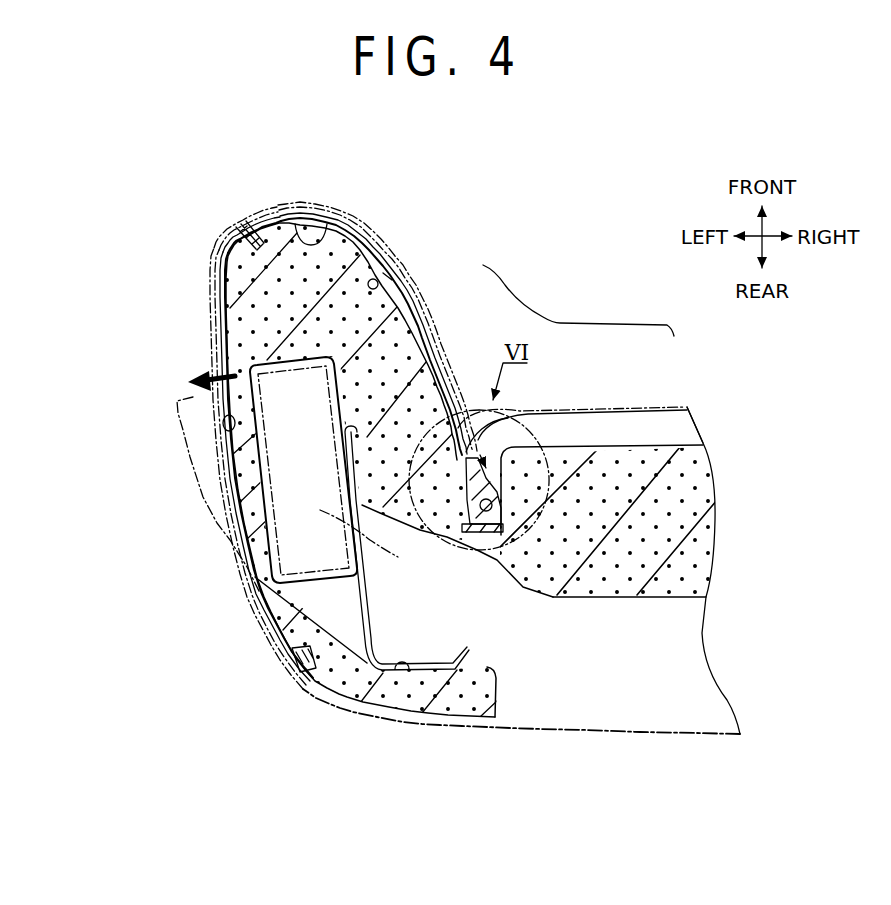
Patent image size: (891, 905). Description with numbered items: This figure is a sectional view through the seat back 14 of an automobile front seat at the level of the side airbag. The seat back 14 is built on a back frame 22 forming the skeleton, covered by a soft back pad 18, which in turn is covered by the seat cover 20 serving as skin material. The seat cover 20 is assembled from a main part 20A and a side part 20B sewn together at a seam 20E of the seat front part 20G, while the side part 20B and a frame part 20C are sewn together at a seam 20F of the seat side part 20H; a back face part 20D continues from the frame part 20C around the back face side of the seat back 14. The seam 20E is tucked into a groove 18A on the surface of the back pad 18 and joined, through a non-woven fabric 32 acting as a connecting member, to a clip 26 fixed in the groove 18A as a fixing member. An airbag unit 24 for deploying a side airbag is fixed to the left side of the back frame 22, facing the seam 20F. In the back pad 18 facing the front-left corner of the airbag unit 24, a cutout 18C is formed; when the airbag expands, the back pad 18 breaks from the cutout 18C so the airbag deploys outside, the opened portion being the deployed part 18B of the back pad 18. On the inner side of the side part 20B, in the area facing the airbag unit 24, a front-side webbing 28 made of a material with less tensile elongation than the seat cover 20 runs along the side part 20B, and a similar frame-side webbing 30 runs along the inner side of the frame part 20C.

The seat back 14 is at (537, 753).
The back pad 18 is at (621, 460).
The groove 18A is at (500, 478).
The deployed part 18B is at (200, 468).
The cutout 18C is at (257, 370).
The seat cover 20 is at (593, 407).
The main part 20A is at (653, 404).
The side part 20B is at (427, 320).
The frame part 20C is at (211, 307).
The back face part 20D is at (400, 726).
The seam 20E is at (507, 420).
The seam 20F is at (230, 225).
The seat front part 20G is at (578, 300).
The seat side part 20H is at (190, 223).
The back frame 22 is at (373, 624).
The airbag unit 24 is at (377, 541).
The clip 26 is at (483, 540).
The front-side webbing 28 is at (385, 274).
The frame-side webbing 30 is at (225, 433).
The non-woven fabric 32 is at (478, 470).